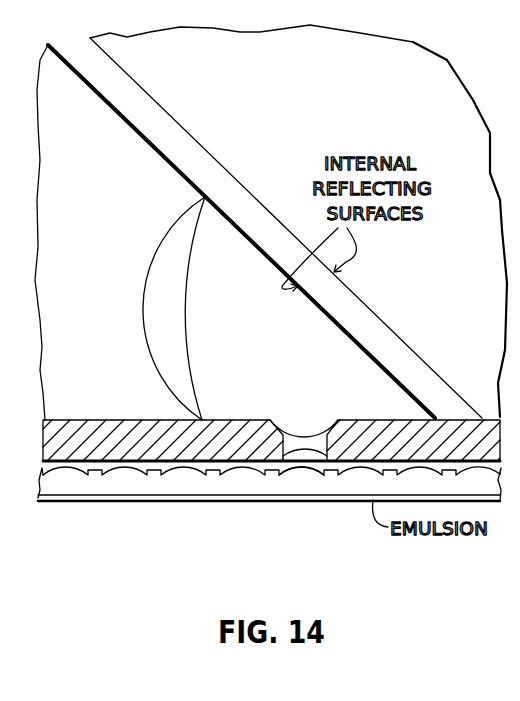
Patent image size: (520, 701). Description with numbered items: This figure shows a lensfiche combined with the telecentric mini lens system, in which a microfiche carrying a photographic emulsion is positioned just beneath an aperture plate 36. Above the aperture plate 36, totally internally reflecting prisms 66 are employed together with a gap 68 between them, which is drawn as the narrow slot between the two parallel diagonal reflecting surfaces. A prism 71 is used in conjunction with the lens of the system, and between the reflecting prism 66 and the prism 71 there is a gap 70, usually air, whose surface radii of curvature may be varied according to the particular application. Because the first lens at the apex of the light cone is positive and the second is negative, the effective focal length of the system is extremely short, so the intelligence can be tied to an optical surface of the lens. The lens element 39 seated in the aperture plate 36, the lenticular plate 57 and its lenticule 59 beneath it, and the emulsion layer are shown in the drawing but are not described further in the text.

The totally internally reflecting prism 66 is at (102, 200).
The gap 68 is at (172, 138).
The gap 70 is at (163, 296).
The prism 71 is at (254, 348).
The aperture plate 36 is at (115, 430).
The biconcave lens element 39 is at (303, 437).
The lenticular plate 57 is at (215, 487).
The lenticule 59 is at (308, 467).